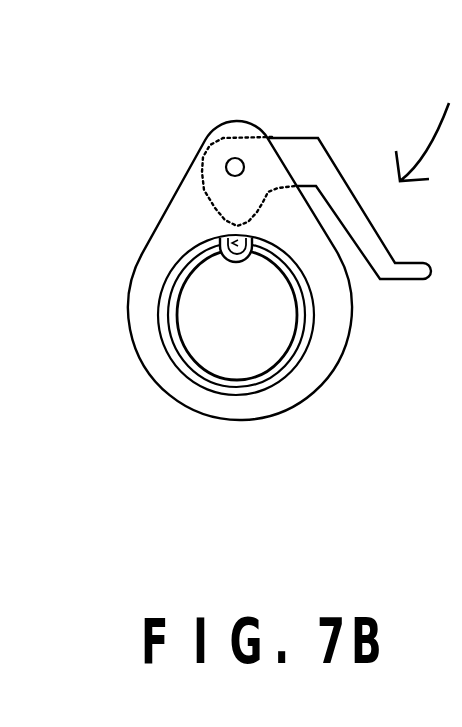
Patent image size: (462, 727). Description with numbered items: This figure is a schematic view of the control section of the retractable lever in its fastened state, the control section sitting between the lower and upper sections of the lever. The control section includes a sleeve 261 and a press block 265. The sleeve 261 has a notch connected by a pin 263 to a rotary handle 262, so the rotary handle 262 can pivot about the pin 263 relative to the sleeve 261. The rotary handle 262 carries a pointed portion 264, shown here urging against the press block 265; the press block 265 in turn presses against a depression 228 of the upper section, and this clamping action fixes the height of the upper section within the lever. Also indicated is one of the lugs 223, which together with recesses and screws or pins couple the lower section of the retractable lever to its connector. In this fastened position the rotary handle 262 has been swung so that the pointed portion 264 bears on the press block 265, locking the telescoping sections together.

The lugs 223 is at (188, 383).
The depression 228 is at (245, 258).
The sleeve 261 is at (283, 398).
The rotary handle 262 is at (360, 212).
The pin 263 is at (234, 160).
The pointed portion 264 is at (232, 202).
The press block 265 is at (167, 265).